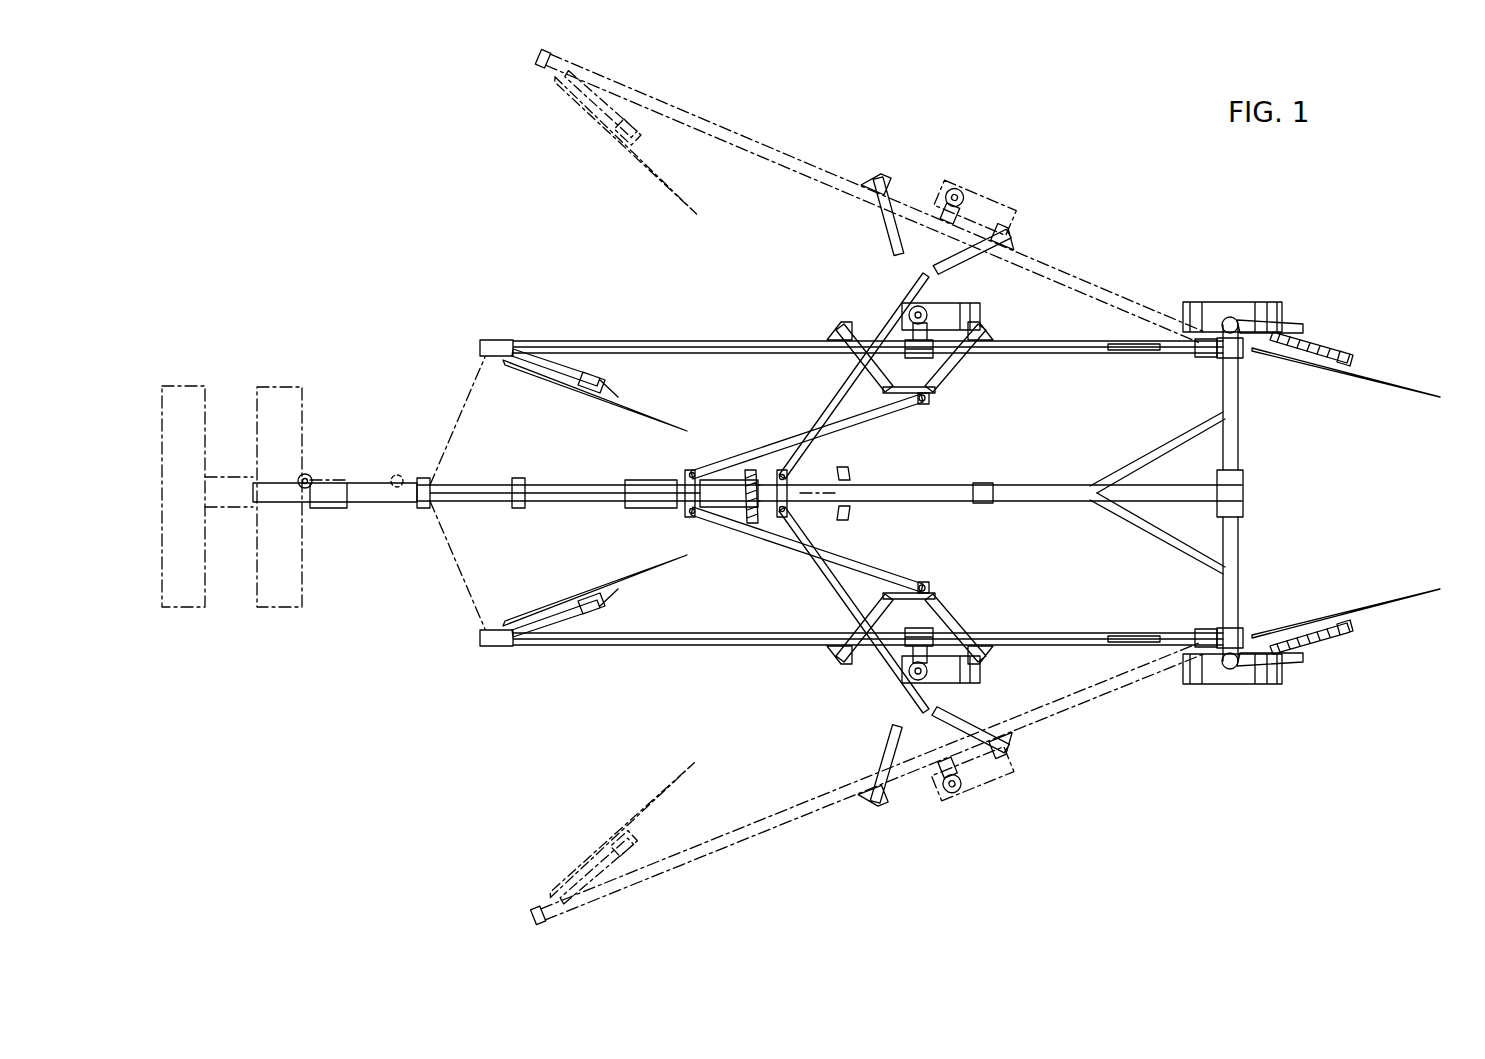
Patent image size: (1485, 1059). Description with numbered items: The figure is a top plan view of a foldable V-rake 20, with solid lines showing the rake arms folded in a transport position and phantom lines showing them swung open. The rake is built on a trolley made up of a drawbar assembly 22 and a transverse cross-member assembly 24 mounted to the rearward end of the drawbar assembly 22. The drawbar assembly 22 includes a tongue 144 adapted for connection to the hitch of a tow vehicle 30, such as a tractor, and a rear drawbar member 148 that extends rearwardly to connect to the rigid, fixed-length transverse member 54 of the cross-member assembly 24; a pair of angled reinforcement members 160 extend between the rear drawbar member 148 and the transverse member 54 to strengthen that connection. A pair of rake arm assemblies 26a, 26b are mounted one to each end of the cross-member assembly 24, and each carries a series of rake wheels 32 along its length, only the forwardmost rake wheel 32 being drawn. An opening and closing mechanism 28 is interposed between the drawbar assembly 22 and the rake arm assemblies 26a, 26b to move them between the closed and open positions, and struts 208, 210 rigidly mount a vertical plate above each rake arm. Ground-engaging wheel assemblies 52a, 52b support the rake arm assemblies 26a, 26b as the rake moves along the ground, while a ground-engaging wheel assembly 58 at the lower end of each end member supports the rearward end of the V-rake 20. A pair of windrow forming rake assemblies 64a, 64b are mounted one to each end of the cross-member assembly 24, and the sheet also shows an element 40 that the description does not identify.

The foldable V-rake 20 is at (846, 486).
The drawbar assembly 22 is at (586, 512).
The cross-member assembly 24 is at (1255, 445).
The rake arm assembly 26a is at (777, 333).
The rake arm assembly 26b is at (782, 656).
The opening and closing mechanism 28 is at (737, 545).
The tow vehicle 30 is at (193, 383).
The rake wheel 32 is at (612, 403).
The ground engaging tool unit 40 is at (565, 386).
The ground-engaging wheel assembly 52a is at (969, 285).
The ground-engaging wheel assembly 52b is at (960, 690).
The transverse member 54 is at (1238, 542).
The ground-engaging wheel assembly 58 is at (1289, 292).
The windrow forming rake assembly 64a is at (1313, 390).
The windrow forming rake assembly 64b is at (1320, 602).
The tongue 144 is at (373, 503).
The rear drawbar member 148 is at (907, 486).
The angled reinforcement member 160 is at (1168, 433).
The strut 208 is at (877, 372).
The strut 210 is at (950, 363).